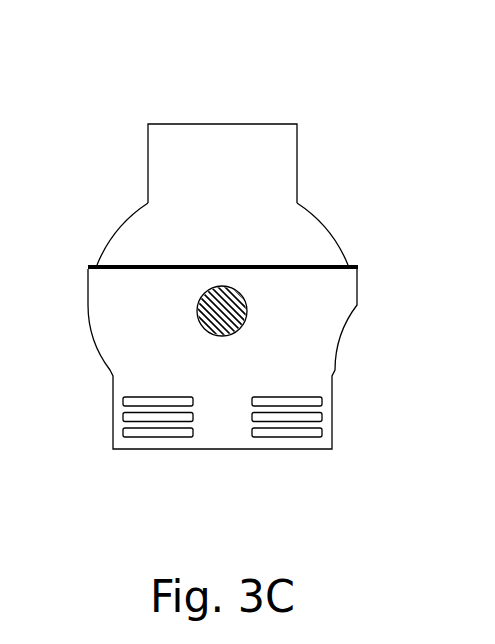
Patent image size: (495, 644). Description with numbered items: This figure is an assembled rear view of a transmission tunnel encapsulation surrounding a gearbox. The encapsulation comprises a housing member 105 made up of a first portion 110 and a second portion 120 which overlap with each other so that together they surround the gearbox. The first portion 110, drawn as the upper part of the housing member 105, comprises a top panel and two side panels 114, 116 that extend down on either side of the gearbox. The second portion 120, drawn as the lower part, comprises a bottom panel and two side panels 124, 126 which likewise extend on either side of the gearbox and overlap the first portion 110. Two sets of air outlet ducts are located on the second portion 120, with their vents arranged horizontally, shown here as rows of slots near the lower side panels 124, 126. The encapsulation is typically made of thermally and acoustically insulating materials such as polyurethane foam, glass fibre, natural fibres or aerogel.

The housing member 105 is at (148, 86).
The first portion 110 is at (263, 135).
The side panel 114 is at (118, 228).
The side panel 116 is at (313, 210).
The second portion 120 is at (313, 310).
The side panel 124 is at (112, 413).
The side panel 126 is at (333, 410).